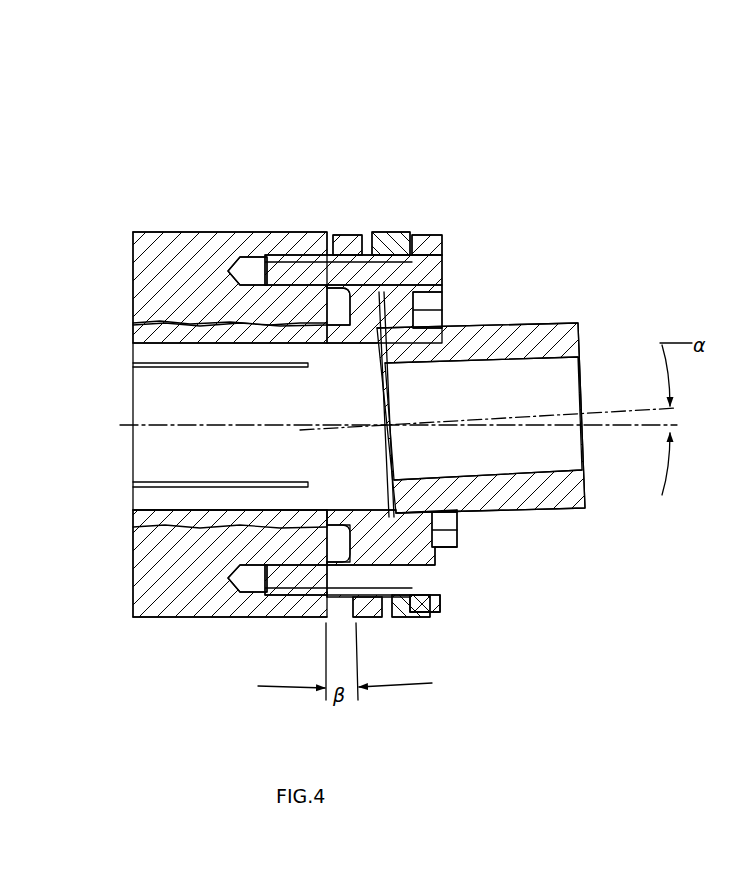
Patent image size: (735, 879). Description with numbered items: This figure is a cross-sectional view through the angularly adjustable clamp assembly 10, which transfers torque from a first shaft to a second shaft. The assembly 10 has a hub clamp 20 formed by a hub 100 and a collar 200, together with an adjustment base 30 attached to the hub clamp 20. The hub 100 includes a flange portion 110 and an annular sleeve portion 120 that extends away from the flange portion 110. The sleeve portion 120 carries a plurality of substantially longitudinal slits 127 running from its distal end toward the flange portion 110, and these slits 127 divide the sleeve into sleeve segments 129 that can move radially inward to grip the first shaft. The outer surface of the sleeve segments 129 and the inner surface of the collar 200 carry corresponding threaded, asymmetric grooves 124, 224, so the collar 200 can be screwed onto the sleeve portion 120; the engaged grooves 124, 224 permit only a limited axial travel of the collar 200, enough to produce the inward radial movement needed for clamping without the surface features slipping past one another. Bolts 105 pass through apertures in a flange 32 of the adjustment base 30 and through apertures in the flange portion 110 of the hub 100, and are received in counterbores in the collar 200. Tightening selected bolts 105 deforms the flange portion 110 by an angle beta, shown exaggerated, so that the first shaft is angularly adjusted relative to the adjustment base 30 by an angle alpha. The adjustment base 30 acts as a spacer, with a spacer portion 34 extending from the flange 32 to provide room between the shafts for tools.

The angularly adjustable clamp assembly 10 is at (447, 150).
The hub clamp 20 is at (228, 632).
The adjustment base 30 is at (520, 326).
The flange 32 is at (395, 243).
The spacer portion 34 is at (533, 490).
The hub 100 is at (340, 303).
The bolts 105 is at (437, 258).
The flange portion 110 is at (355, 250).
The annular sleeve portion 120 is at (145, 336).
The asymmetric grooves 124 is at (210, 523).
The longitudinal slits 127 is at (168, 368).
The sleeve segments 129 is at (148, 456).
The collar 200 is at (168, 250).
The asymmetric grooves 224 is at (180, 520).